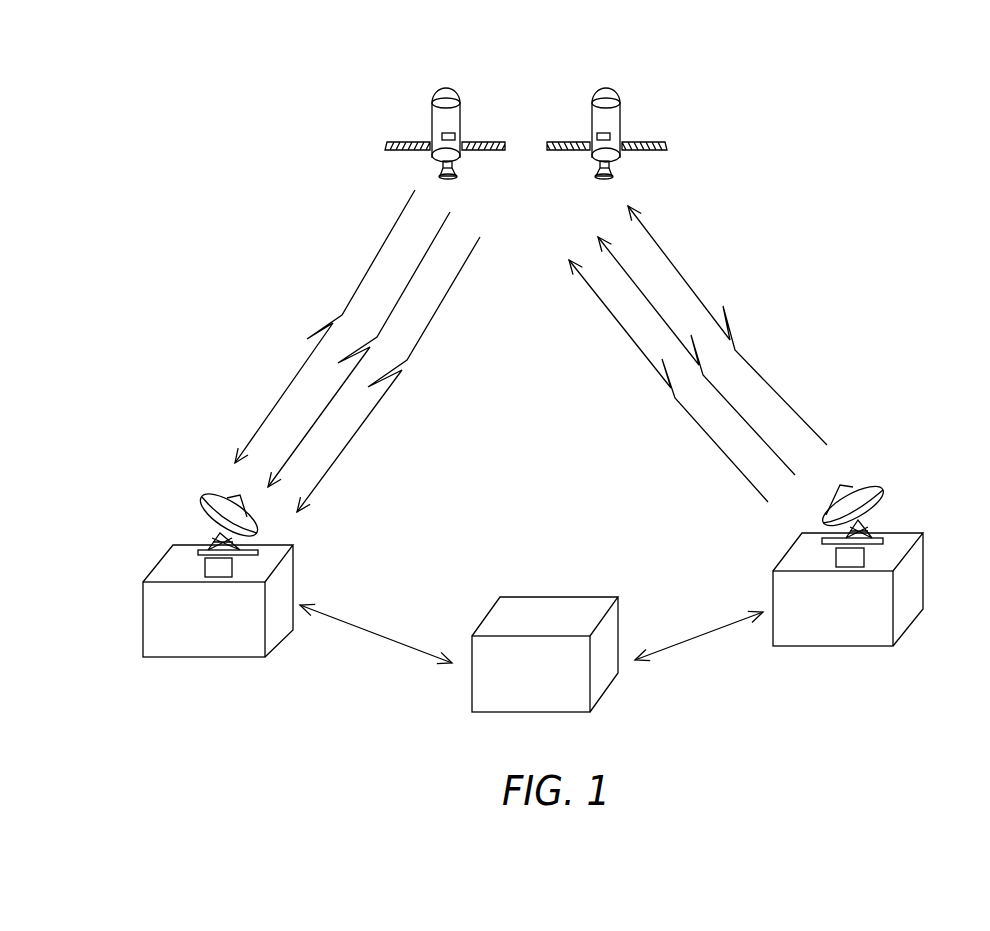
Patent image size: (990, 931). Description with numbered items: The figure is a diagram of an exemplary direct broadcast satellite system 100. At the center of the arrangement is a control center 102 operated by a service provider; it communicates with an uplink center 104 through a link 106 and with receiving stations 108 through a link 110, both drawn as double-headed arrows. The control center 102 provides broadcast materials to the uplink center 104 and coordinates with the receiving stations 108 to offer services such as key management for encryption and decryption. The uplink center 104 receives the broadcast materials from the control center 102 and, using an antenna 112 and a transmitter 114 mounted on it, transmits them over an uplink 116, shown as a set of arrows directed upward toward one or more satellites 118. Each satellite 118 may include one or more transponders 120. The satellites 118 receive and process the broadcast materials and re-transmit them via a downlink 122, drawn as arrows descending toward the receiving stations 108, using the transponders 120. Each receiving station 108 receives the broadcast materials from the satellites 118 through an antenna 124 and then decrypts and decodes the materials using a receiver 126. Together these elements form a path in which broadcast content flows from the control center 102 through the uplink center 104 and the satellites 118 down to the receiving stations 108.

The direct broadcast satellite system 100 is at (858, 245).
The control center 102 is at (590, 668).
The uplink center 104 is at (840, 646).
The link 106 is at (683, 642).
The receiving stations 108 is at (215, 657).
The link 110 is at (397, 641).
The antenna 112 is at (879, 488).
The transmitter 114 is at (864, 557).
The uplink 116 is at (750, 348).
The satellites 118 is at (408, 151).
The transponders 120 is at (452, 132).
The downlink 122 is at (300, 365).
The antenna 124 is at (210, 500).
The receiver 126 is at (203, 569).